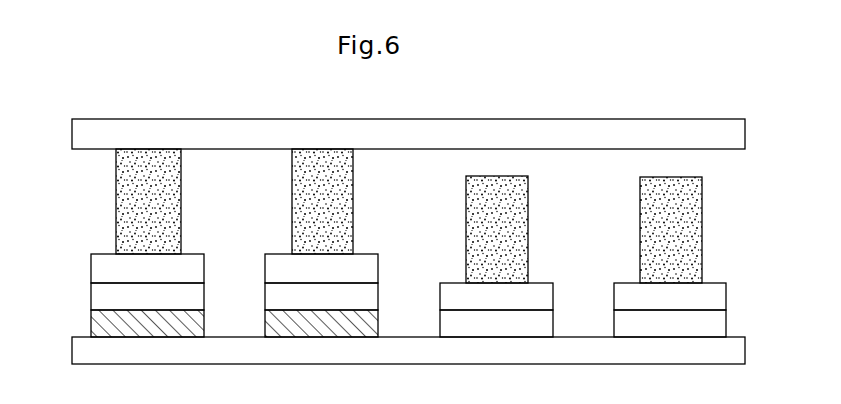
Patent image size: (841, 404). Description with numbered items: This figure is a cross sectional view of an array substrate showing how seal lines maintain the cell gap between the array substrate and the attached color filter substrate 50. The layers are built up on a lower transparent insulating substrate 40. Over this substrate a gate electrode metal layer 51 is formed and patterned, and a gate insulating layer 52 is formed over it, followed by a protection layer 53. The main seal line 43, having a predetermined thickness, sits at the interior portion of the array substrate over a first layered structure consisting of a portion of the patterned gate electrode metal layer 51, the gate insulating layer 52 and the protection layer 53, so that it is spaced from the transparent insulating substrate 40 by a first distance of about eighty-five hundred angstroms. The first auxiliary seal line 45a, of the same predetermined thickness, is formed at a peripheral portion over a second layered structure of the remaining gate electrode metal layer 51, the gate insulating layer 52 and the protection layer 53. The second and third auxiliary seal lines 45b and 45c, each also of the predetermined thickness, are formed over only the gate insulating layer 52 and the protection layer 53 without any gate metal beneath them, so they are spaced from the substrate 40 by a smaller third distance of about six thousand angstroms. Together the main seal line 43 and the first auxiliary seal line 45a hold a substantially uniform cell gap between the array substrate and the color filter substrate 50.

The transparent insulating substrate 40 is at (737, 356).
The color filter substrate 50 is at (737, 138).
The main seal line 43 is at (128, 200).
The first auxiliary seal line 45a is at (345, 184).
The second auxiliary seal line 45b is at (515, 229).
The third auxiliary seal line 45c is at (688, 232).
The gate electrode metal layer 51 is at (100, 322).
The gate insulating layer 52 is at (100, 296).
The protection layer 53 is at (100, 272).